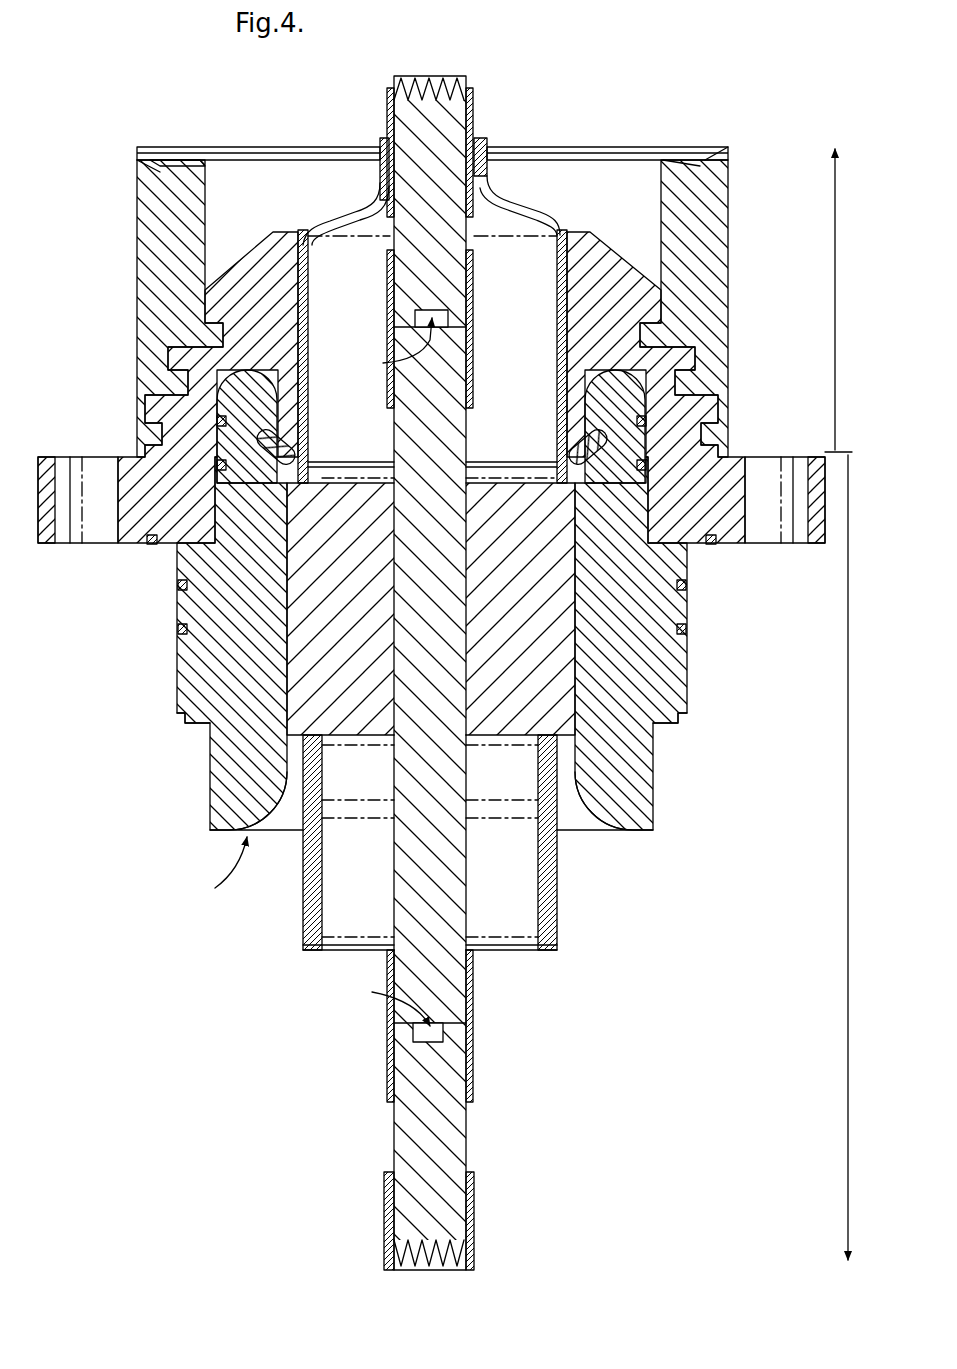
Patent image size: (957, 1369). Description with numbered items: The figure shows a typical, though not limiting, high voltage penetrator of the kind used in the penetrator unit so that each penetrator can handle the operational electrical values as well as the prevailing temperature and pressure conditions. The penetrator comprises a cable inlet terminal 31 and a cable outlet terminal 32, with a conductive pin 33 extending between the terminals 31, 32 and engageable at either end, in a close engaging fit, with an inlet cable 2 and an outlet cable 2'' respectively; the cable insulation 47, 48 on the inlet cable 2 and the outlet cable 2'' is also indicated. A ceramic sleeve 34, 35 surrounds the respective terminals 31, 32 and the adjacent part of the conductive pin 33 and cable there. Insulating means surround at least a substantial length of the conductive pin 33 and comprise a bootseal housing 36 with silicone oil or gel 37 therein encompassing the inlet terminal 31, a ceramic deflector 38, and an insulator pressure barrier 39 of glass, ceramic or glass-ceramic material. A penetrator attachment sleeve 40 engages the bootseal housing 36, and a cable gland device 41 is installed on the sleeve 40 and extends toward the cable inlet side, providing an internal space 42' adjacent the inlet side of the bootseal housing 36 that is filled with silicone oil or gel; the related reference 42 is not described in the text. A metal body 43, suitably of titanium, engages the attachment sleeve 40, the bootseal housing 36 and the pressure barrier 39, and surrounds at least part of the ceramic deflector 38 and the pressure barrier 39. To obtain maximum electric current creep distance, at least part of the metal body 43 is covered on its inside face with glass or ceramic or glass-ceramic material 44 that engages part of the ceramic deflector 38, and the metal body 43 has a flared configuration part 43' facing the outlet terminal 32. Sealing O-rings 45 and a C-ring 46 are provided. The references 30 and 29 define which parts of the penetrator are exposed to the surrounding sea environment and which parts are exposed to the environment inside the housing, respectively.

The inlet cable 2 is at (432, 399).
The outlet cable 2'' is at (453, 1110).
The housing environment reference 29 is at (829, 857).
The sea environment reference 30 is at (849, 300).
The cable inlet terminal 31 is at (390, 348).
The cable outlet terminal 32 is at (383, 1001).
The conductive pin 33 is at (405, 878).
The ceramic sleeve 34 is at (395, 327).
The ceramic sleeve 35 is at (468, 1022).
The bootseal housing 36 is at (487, 172).
The silicone oil or gel 37 is at (538, 245).
The ceramic deflector 38 is at (543, 478).
The insulator pressure barrier 39 is at (360, 700).
The penetrator attachment sleeve 40 is at (165, 472).
The cable gland device 41 is at (705, 256).
The top plate 42 is at (432, 142).
The internal space 42' is at (159, 308).
The metal body 43 is at (462, 643).
The flared configuration part 43' is at (399, 798).
The glass or ceramic or glass-ceramic material 44 is at (213, 868).
The sealing O-rings 45 is at (218, 420).
The C-ring 46 is at (180, 723).
The cable insulation 47 is at (477, 100).
The cable insulation 48 is at (383, 1222).